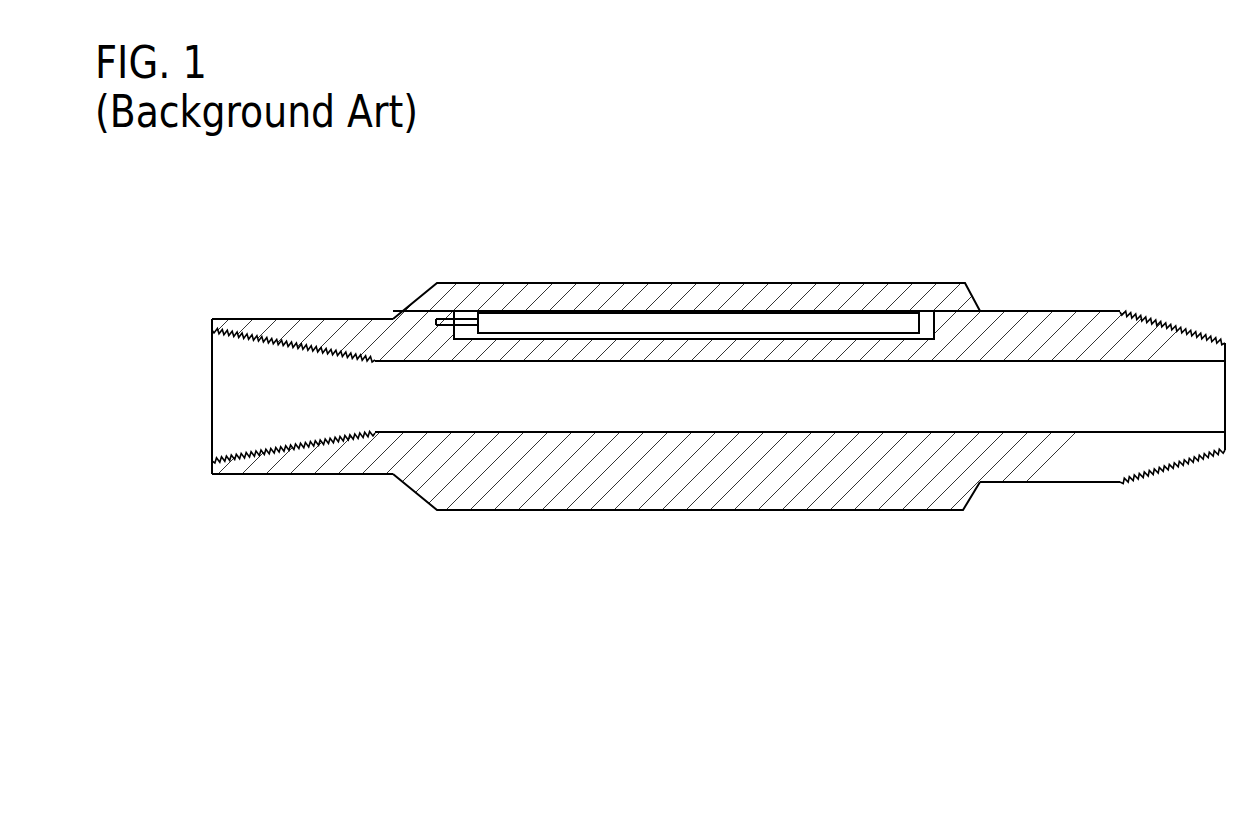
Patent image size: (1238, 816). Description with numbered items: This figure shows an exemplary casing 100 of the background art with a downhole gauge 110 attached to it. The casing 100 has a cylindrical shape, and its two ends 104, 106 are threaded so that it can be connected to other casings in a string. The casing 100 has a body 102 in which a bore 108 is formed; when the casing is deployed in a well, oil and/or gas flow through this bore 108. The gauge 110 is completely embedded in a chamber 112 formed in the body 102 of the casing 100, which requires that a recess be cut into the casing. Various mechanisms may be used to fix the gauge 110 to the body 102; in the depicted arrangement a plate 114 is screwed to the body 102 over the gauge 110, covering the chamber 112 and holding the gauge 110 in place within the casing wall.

The casing 100 is at (682, 207).
The body 102 is at (332, 338).
The end 104 is at (274, 319).
The end 106 is at (1137, 312).
The bore 108 is at (1061, 400).
The downhole gauge 110 is at (723, 322).
The chamber 112 is at (925, 322).
The plate 114 is at (595, 282).